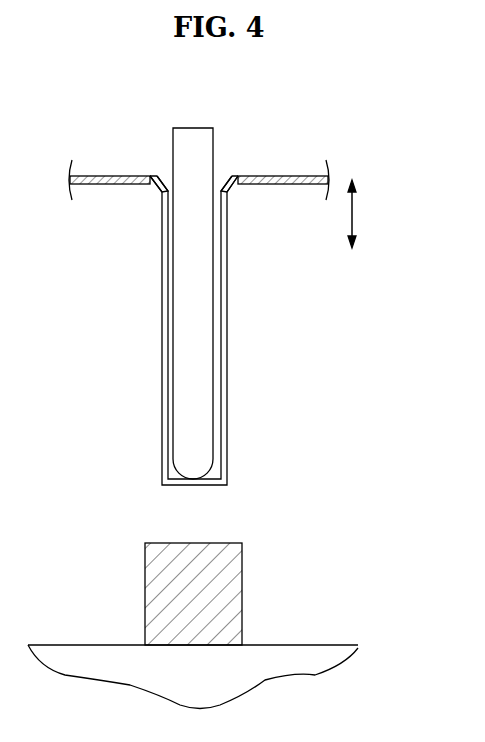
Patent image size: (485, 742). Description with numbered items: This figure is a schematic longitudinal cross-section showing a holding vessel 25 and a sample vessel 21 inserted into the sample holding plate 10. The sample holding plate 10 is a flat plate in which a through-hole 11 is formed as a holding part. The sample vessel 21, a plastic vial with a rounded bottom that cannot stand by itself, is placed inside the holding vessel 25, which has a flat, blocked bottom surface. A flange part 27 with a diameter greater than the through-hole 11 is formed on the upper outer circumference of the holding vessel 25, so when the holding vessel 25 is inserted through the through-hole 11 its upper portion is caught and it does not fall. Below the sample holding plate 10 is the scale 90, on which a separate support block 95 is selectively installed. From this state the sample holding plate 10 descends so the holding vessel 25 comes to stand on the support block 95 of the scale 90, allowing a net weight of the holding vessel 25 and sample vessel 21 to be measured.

The sample holding plate 10 is at (307, 180).
The through-hole 11 is at (158, 187).
The sample vessel 21 is at (173, 147).
The holding vessel 25 is at (224, 352).
The flange part 27 is at (228, 173).
The scale 90 is at (306, 657).
The support block 95 is at (145, 592).